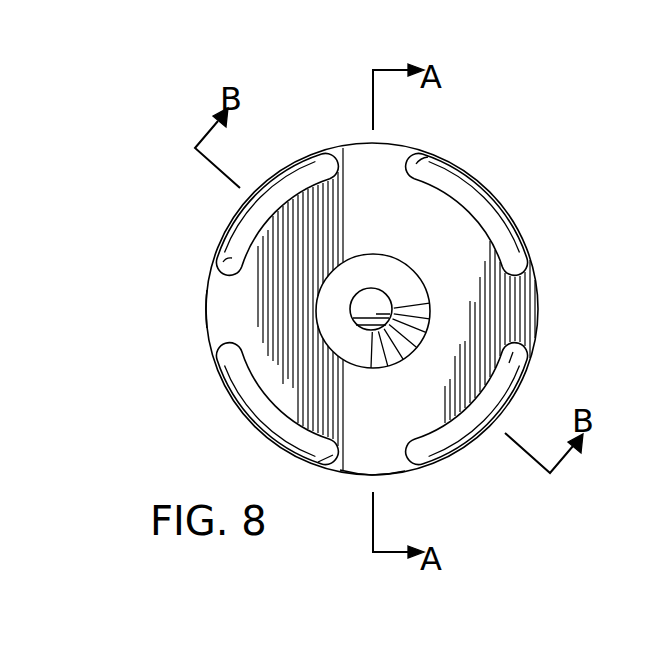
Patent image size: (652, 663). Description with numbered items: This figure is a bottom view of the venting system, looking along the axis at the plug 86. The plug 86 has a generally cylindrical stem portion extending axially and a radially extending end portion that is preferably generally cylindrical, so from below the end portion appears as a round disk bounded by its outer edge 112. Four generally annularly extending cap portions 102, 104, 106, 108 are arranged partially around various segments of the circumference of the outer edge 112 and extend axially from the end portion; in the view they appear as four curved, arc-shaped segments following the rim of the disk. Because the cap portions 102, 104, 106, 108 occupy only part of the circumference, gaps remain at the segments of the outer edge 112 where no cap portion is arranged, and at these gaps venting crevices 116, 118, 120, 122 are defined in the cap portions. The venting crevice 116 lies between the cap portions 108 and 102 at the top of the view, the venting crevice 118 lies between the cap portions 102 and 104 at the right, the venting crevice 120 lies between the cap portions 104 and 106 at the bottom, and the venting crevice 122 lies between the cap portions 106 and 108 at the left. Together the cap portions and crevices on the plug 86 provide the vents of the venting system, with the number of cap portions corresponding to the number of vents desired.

The plug 86 is at (388, 154).
The cap portion 102 is at (514, 240).
The cap portion 104 is at (517, 405).
The cap portion 106 is at (218, 375).
The cap portion 108 is at (230, 229).
The outer edge 112 is at (355, 457).
The venting crevice 116 is at (344, 150).
The venting crevice 118 is at (525, 300).
The venting crevice 120 is at (390, 465).
The venting crevice 122 is at (205, 308).